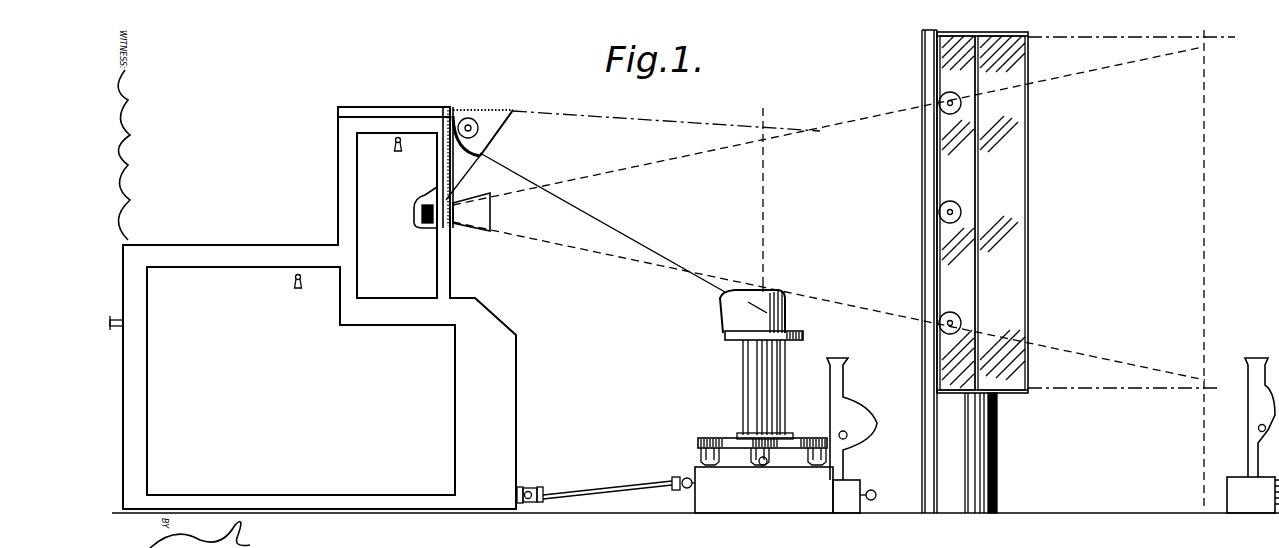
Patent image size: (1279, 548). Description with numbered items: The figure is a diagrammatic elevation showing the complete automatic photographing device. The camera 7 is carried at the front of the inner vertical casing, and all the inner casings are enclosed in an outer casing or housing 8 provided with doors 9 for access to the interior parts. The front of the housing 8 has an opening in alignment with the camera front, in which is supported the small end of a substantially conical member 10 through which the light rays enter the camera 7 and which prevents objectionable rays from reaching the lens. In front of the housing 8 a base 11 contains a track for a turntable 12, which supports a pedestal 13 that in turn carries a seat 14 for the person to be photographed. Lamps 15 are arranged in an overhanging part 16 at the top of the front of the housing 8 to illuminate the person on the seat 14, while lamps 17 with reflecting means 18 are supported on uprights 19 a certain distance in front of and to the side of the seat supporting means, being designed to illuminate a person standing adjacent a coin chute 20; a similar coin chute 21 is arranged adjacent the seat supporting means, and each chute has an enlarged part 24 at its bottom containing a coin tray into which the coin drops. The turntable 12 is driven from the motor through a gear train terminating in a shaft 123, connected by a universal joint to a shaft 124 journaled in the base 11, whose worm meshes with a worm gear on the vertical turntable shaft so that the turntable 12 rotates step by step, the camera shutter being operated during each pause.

The camera 7 is at (417, 228).
The casing or housing 8 is at (240, 253).
The doors 9 is at (372, 225).
The conical member 10 is at (482, 237).
The base 11 is at (785, 502).
The turntable 12 is at (723, 437).
The pedestal 13 is at (760, 370).
The seat 14 is at (737, 317).
The lamps 15 is at (478, 110).
The overhanging part 16 is at (510, 110).
The lamps 17 is at (932, 170).
The reflecting means 18 is at (1003, 173).
The uprights 19 is at (985, 453).
The coin chute 20 is at (1248, 378).
The coin chute 21 is at (843, 378).
The enlarged part 24 is at (860, 478).
The shaft 123 is at (607, 489).
The shaft 124 is at (687, 476).